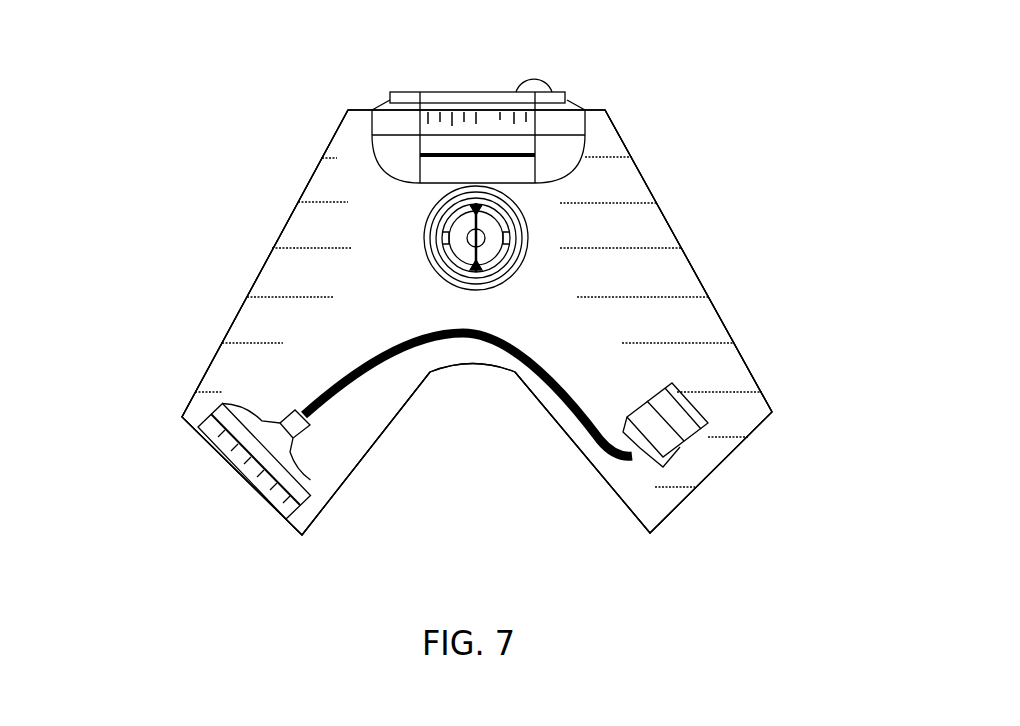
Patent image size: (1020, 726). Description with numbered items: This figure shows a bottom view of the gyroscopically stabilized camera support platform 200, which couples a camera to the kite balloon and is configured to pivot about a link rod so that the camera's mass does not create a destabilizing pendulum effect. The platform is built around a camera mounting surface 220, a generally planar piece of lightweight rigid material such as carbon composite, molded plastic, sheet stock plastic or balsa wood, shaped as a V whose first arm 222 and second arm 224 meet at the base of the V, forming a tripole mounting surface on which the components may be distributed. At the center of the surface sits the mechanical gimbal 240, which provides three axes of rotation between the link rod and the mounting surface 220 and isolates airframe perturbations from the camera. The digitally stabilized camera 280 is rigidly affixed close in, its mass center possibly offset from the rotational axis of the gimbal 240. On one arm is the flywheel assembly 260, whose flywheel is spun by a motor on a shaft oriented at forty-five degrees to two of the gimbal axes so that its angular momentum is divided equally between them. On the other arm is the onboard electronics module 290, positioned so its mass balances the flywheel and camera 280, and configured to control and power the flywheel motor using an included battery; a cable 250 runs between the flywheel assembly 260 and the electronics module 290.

The gyroscopically stabilized camera support platform 200 is at (786, 110).
The camera mounting surface 220 is at (258, 273).
The first arm 222 is at (195, 351).
The second arm 224 is at (750, 345).
The mechanical gimbal 240 is at (543, 218).
The cable 250 is at (468, 394).
The flywheel assembly 260 is at (210, 486).
The digitally stabilized camera 280 is at (373, 142).
The onboard electronics module 290 is at (693, 447).